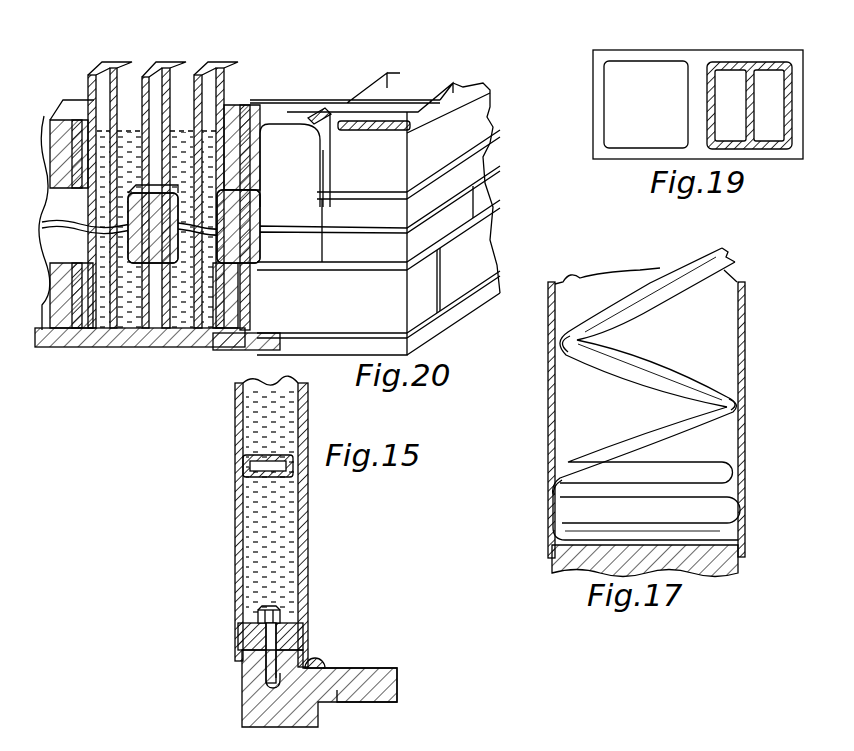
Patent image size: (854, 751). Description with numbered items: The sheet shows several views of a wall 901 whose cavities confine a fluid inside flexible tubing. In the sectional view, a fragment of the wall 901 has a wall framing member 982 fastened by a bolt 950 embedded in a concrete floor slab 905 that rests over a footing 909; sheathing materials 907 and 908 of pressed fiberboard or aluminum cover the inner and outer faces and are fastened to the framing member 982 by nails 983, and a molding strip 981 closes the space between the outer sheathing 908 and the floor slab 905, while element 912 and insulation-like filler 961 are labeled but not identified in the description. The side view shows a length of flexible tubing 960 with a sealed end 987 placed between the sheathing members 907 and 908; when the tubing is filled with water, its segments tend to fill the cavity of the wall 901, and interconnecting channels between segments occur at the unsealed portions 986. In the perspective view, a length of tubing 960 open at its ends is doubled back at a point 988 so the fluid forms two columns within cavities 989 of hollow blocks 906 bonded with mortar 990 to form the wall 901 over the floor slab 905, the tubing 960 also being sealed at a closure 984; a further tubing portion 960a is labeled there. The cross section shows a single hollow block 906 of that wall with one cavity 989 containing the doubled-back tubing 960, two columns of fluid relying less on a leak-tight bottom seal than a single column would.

In FIG. 20, the wall 901 is at (345, 316).
In FIG. 15, the wall 901 is at (267, 532).
In FIG. 17, the wall 901 is at (697, 332).
In FIG. 20, the concrete floor slab 905 is at (240, 336).
In FIG. 15, the concrete floor slab 905 is at (384, 680).
In FIG. 20, the hollow block 906 is at (422, 135).
In FIG. 19, the hollow block 906 is at (609, 55).
In FIG. 15, the sheathing material 907 is at (236, 574).
In FIG. 17, the sheathing material 907 is at (549, 443).
In FIG. 15, the sheathing material 908 is at (310, 578).
In FIG. 17, the sheathing material 908 is at (746, 460).
In FIG. 15, the footing 909 is at (258, 713).
In FIG. 15, the bracket 912 is at (250, 465).
In FIG. 15, the bolt 950 is at (266, 680).
In FIG. 20, the flexible tubing 960 is at (198, 70).
In FIG. 15, the flexible tubing 960 is at (277, 525).
In FIG. 17, the flexible tubing 960 is at (652, 394).
In FIG. 19, the flexible tubing 960 is at (740, 63).
In FIG. 20, the tubular member 960a is at (137, 7).
In FIG. 20, the insulation 961 is at (103, 302).
In FIG. 15, the insulation 961 is at (283, 508).
In FIG. 15, the molding strip 981 is at (322, 660).
In FIG. 20, the wall framing member 982 is at (258, 6).
In FIG. 15, the wall framing member 982 is at (288, 632).
In FIG. 17, the wall framing member 982 is at (723, 560).
In FIG. 15, the nail 983 is at (283, 651).
In FIG. 20, the closure 984 is at (370, 126).
In FIG. 17, the unsealed portion 986 is at (732, 407).
In FIG. 17, the sealed end 987 is at (560, 518).
In FIG. 20, the point 988 is at (193, 312).
In FIG. 20, the cavity 989 is at (398, 95).
In FIG. 19, the cavity 989 is at (650, 83).
In FIG. 20, the mortar 990 is at (78, 124).